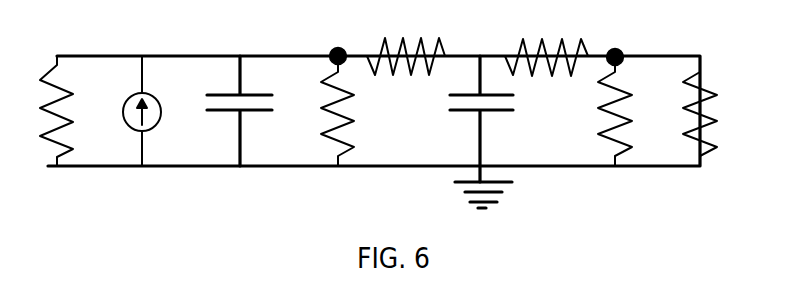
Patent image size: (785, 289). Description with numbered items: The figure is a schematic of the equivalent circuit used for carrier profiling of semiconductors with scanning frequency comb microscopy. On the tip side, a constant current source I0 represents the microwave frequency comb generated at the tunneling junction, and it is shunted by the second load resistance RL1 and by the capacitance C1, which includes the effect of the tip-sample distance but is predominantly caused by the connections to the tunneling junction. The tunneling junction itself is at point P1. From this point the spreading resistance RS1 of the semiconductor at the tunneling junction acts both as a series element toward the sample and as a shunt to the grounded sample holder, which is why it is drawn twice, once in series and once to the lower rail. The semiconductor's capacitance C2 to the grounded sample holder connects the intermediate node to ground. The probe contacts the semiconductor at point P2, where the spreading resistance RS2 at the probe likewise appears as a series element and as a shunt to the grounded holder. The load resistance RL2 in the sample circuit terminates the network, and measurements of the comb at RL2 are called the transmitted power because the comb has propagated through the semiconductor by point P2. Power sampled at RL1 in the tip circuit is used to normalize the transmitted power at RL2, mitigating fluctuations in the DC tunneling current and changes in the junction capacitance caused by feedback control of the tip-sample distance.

The second load resistance RL1 is at (75, 111).
The constant current source I0 is at (153, 111).
The capacitance C1 is at (256, 111).
The tunneling junction point P1 is at (339, 37).
The spreading resistance at the tunneling junction RS1 is at (383, 84).
The capacitance to the grounded sample holder C2 is at (500, 132).
The spreading resistance at the probe RS2 is at (584, 84).
The probe point P2 is at (623, 41).
The load resistance in the sample circuit RL2 is at (717, 111).